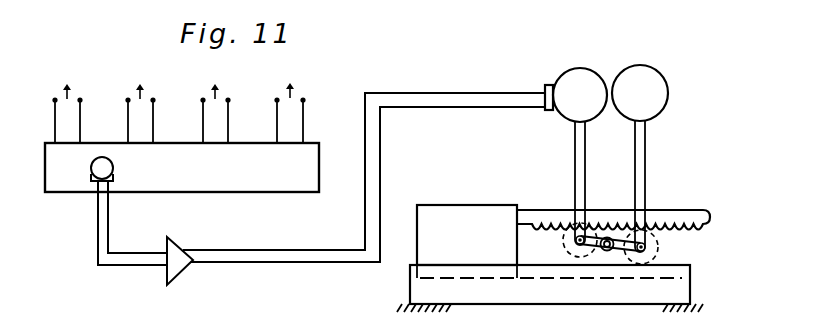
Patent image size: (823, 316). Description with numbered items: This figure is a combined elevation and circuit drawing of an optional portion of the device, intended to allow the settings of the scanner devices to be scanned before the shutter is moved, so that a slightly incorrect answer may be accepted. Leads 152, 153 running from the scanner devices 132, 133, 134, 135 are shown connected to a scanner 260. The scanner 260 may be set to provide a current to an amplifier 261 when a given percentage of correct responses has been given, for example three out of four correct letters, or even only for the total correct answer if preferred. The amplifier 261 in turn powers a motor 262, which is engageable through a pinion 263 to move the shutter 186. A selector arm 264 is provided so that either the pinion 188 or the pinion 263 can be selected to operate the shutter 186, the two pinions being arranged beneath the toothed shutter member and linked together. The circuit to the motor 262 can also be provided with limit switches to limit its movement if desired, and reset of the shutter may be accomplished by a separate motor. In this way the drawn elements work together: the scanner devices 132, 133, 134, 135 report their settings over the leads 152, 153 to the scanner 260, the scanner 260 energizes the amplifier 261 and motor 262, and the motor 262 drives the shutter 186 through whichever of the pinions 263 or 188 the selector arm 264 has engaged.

The scanner device 132 is at (62, 84).
The scanner device 133 is at (133, 84).
The scanner device 134 is at (211, 84).
The scanner device 135 is at (287, 83).
The lead 152 is at (54, 101).
The lead 153 is at (79, 101).
The shutter 186 is at (445, 205).
The pinion 188 is at (657, 248).
The scanner 260 is at (204, 177).
The amplifier 261 is at (318, 189).
The motor 262 is at (579, 68).
The pinion 263 is at (550, 229).
The selector arm 264 is at (628, 220).